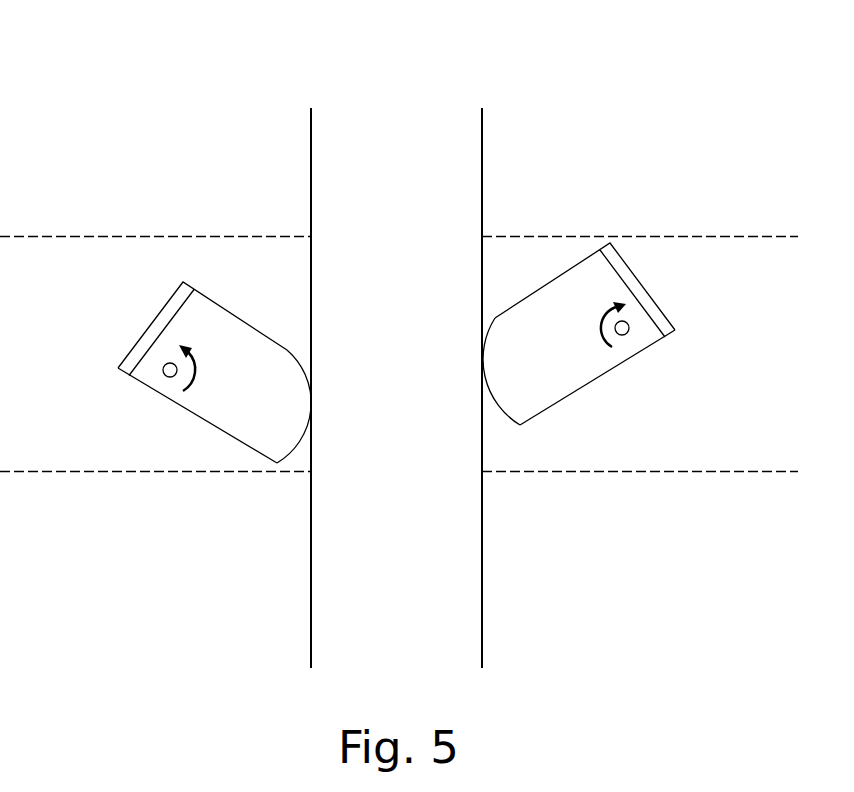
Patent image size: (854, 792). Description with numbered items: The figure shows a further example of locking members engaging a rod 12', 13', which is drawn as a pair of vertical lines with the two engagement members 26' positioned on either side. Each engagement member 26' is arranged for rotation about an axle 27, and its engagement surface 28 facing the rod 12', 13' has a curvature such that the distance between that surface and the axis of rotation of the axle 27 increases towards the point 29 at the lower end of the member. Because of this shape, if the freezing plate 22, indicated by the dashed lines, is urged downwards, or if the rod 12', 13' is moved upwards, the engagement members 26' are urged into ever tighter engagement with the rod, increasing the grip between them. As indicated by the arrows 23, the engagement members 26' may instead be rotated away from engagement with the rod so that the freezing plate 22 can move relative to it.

The rod 12' is at (389, 341).
The rod 13' is at (492, 341).
The freezing plate 22 is at (752, 253).
The arrows 23 is at (593, 333).
The engagement member 26' is at (396, 265).
The axle 27 is at (163, 371).
The engagement surface 28 is at (300, 353).
The point 29 is at (277, 463).